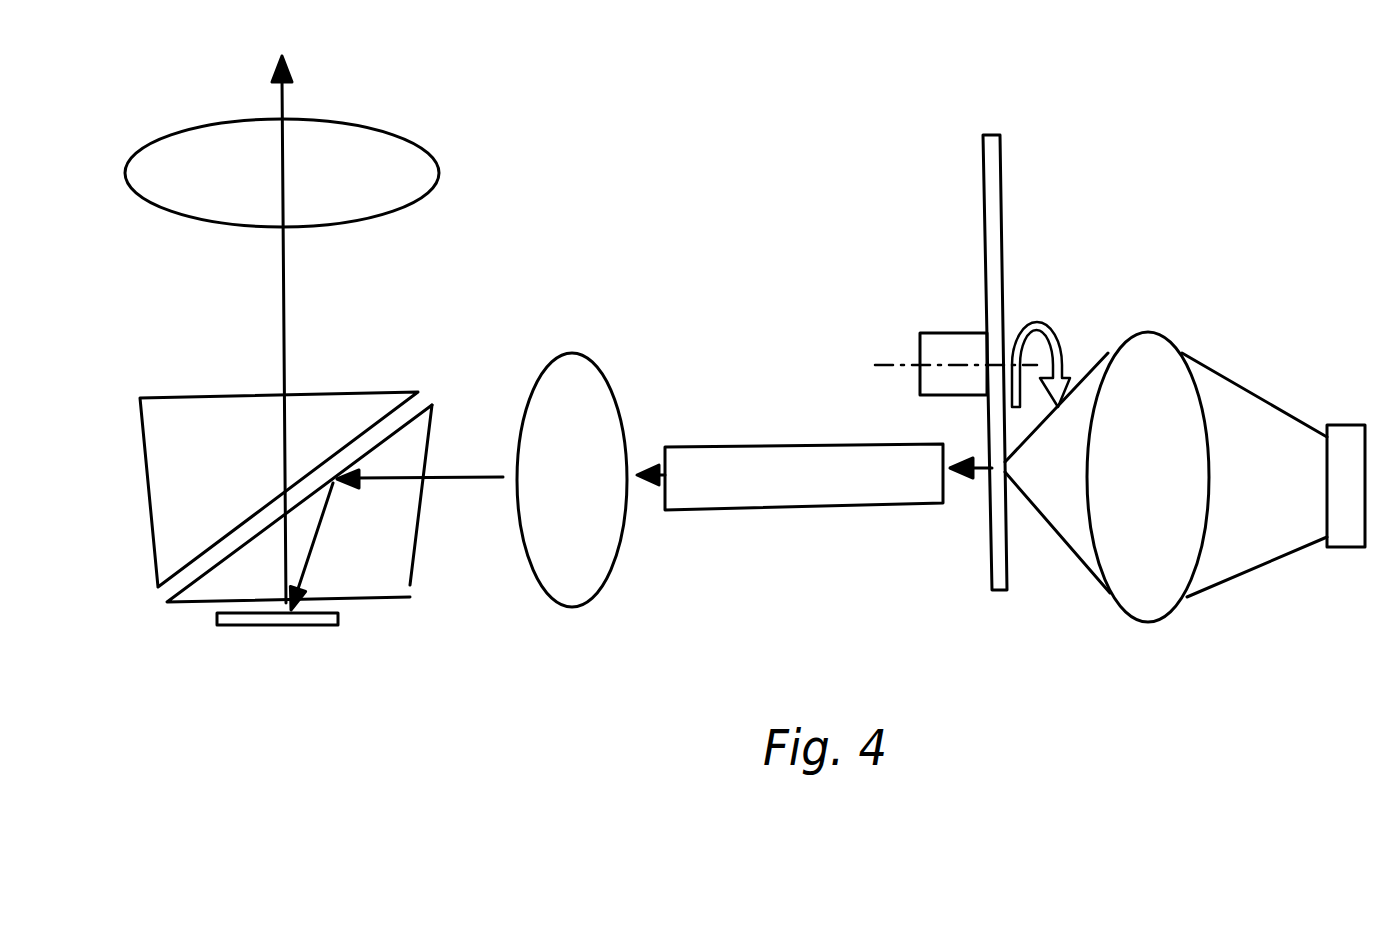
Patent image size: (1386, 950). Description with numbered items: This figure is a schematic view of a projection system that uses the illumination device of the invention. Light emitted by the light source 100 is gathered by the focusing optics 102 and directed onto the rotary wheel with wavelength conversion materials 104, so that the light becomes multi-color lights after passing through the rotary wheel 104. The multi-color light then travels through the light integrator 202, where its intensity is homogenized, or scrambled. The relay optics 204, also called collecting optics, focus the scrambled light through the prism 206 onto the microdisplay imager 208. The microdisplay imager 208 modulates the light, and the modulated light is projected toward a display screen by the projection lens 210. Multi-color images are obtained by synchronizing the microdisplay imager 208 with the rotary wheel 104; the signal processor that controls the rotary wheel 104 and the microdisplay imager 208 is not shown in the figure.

The light source 100 is at (1343, 547).
The focusing optics 102 is at (1145, 332).
The rotary wheel with wavelength conversion materials 104 is at (990, 217).
The light integrator 202 is at (677, 447).
The relay optics 204 is at (577, 603).
The prism 206 is at (334, 395).
The microdisplay imager 208 is at (262, 625).
The projection lens 210 is at (343, 120).